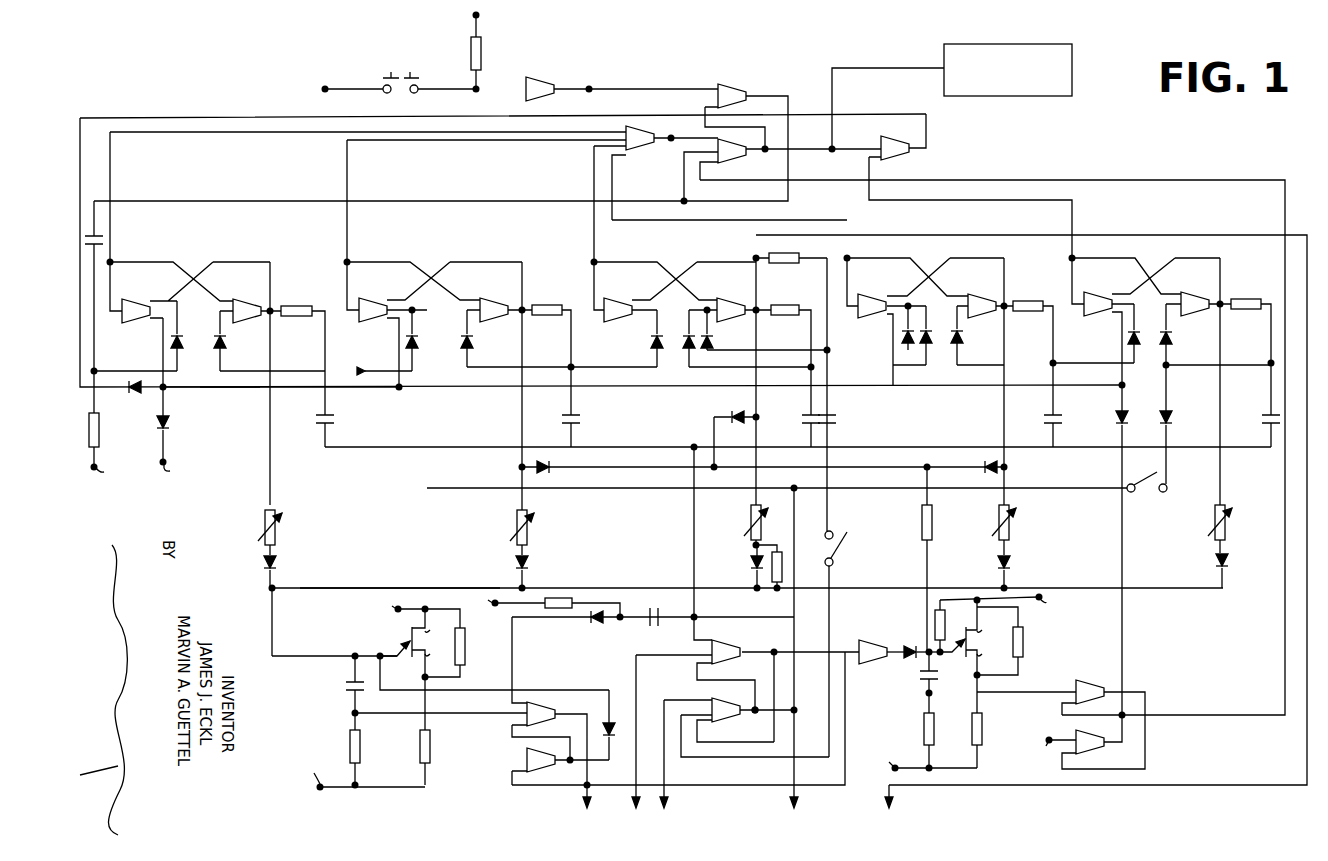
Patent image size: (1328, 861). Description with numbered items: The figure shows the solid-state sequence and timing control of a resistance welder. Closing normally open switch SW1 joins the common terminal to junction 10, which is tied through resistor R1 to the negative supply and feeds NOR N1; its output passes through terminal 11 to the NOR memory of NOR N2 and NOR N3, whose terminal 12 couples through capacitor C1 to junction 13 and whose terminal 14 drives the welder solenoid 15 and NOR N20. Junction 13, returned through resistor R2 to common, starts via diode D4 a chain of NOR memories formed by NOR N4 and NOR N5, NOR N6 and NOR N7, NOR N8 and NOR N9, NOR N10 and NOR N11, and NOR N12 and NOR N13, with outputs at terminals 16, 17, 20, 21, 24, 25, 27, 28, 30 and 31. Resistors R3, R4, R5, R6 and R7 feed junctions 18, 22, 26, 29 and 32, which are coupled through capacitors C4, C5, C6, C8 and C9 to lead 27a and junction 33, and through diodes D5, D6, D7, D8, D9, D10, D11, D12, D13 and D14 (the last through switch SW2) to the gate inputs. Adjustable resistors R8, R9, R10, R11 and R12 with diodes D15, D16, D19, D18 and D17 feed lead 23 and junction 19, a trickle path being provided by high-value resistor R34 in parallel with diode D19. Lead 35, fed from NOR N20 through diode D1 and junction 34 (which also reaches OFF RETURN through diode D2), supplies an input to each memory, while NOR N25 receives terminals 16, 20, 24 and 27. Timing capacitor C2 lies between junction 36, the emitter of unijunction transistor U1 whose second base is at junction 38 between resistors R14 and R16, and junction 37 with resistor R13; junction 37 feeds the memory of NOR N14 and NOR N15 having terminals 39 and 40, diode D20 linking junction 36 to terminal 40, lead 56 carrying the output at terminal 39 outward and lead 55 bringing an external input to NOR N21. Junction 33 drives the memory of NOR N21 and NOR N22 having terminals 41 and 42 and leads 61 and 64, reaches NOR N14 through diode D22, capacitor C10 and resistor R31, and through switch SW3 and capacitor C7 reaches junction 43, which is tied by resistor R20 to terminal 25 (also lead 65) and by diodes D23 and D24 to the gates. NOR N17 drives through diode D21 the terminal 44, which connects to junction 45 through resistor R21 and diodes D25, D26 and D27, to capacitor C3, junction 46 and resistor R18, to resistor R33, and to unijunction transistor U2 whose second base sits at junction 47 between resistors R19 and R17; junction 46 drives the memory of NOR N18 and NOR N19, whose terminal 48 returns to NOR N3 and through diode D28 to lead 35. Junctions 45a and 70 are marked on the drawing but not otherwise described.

The junction 10 is at (479, 90).
The terminal 11 is at (591, 88).
The terminal 12 is at (688, 205).
The junction 13 is at (96, 369).
The terminal 14 is at (769, 153).
The welder solenoid 15 is at (1045, 96).
The output terminal 16 is at (113, 262).
The terminal 17 is at (273, 305).
The junction 18 is at (361, 372).
The junction 19 is at (268, 588).
The terminal 20 is at (349, 260).
The terminal 21 is at (524, 315).
The junction 22 is at (573, 366).
The lead 23 is at (458, 586).
The terminal 24 is at (597, 260).
The terminal 25 is at (758, 305).
The junction 26 is at (810, 364).
The terminal 27 is at (850, 257).
The lead 27a is at (680, 447).
The terminal 28 is at (1008, 300).
The junction 29 is at (1056, 360).
The terminal 30 is at (1076, 256).
The terminal 31 is at (1224, 298).
The junction 32 is at (1269, 361).
The junction 33 is at (696, 617).
The junction 34 is at (167, 389).
The lead 35 is at (238, 390).
The junction 36 is at (354, 654).
The junction 37 is at (353, 713).
The junction 38 is at (428, 680).
The terminal 39 is at (590, 784).
The terminal 40 is at (570, 763).
The terminal 41 is at (777, 651).
The terminal 42 is at (757, 713).
The junction 43 is at (829, 350).
The terminal 44 is at (926, 656).
The junction 45 is at (925, 465).
The junction node 45a is at (796, 491).
The junction 46 is at (926, 694).
The junction 47 is at (981, 677).
The terminal 48 is at (1126, 715).
The lead 55 is at (638, 796).
The lead 56 is at (590, 796).
The lead 61 is at (667, 798).
The lead 64 is at (798, 800).
The lead 65 is at (998, 235).
The junction node 70 is at (380, 390).
The resistor R1 is at (482, 50).
The resistor R2 is at (101, 438).
The resistor R3 is at (294, 304).
The resistor R4 is at (560, 303).
The resistor R5 is at (791, 303).
The resistor R6 is at (1040, 298).
The resistor R7 is at (1257, 296).
The adjustable resistor R8 is at (280, 528).
The resistor R9 is at (532, 530).
The adjustable resistor R10 is at (752, 536).
The adjustable resistor R11 is at (1014, 528).
The adjustable resistor R12 is at (1230, 528).
The resistor R13 is at (361, 748).
The resistor R14 is at (431, 737).
The resistor R16 is at (465, 646).
The resistor R17 is at (1023, 642).
The resistor R18 is at (934, 728).
The resistor R19 is at (982, 720).
The resistor R20 is at (769, 252).
The resistor R21 is at (933, 526).
The resistor R31 is at (575, 596).
The resistor R33 is at (934, 615).
The resistor R34 is at (778, 590).
The diode D1 is at (141, 393).
The diode D2 is at (170, 425).
The diode D4 is at (185, 343).
The diode D5 is at (226, 343).
The diode D6 is at (420, 342).
The diode D7 is at (473, 341).
The diode D8 is at (651, 342).
The diode D9 is at (683, 342).
The diode D10 is at (931, 341).
The diode D11 is at (963, 337).
The diode D12 is at (1128, 338).
The diode D13 is at (1172, 338).
The diode D14 is at (1173, 419).
The diode D15 is at (276, 564).
The diode D16 is at (530, 565).
The diode D17 is at (1229, 562).
The diode D18 is at (1011, 564).
The diode D19 is at (752, 562).
The diode D20 is at (624, 725).
The diode D21 is at (910, 644).
The diode D22 is at (603, 624).
The diode D23 is at (713, 340).
The diode D24 is at (903, 337).
The diode D25 is at (542, 460).
The diode D26 is at (738, 412).
The diode D27 is at (984, 460).
The diode D28 is at (1115, 414).
The capacitor C1 is at (102, 240).
The capacitor C2 is at (349, 681).
The capacitor C3 is at (938, 680).
The capacitor C4 is at (330, 425).
The capacitor C5 is at (580, 415).
The capacitor C6 is at (806, 416).
The capacitor C7 is at (833, 416).
The capacitor C8 is at (1047, 416).
The capacitor C9 is at (1265, 416).
The capacitor C10 is at (655, 626).
The NOR N1 is at (553, 79).
The NOR N2 is at (750, 86).
The NOR N3 is at (740, 162).
The NOR N4 is at (122, 303).
The NOR N5 is at (260, 302).
The NOR N6 is at (359, 302).
The NOR N7 is at (509, 302).
The NOR N8 is at (604, 302).
The NOR N9 is at (746, 302).
The NOR N10 is at (858, 299).
The NOR N11 is at (998, 299).
The NOR N12 is at (1084, 298).
The NOR N13 is at (1182, 298).
The NOR N14 is at (556, 704).
The NOR N15 is at (527, 762).
The NOR N17 is at (878, 662).
The NOR N18 is at (1082, 685).
The NOR N19 is at (1096, 752).
The NOR N20 is at (906, 152).
The NOR N21 is at (714, 640).
The NOR N22 is at (714, 703).
The NOR N25 is at (628, 134).
The switch SW1 is at (357, 84).
The switch SW2 is at (1150, 470).
The switch SW3 is at (842, 541).
The unijunction transistor U1 is at (410, 633).
The unijunction transistor U2 is at (966, 628).